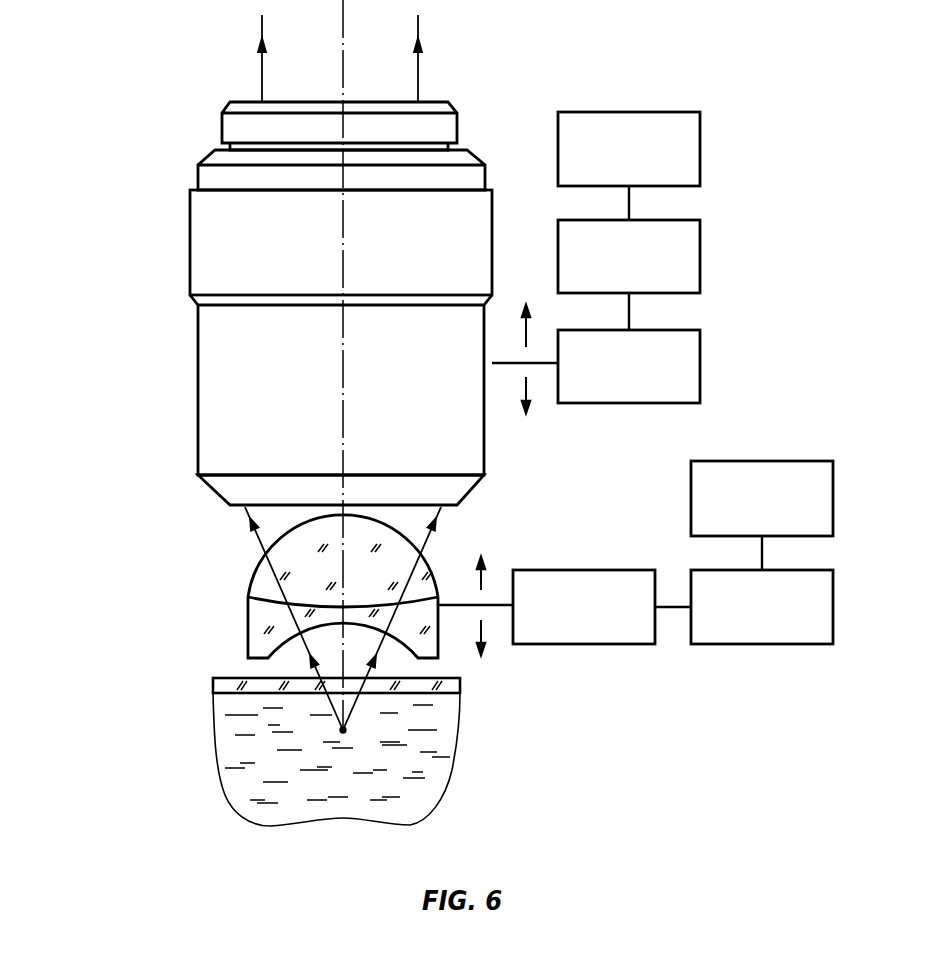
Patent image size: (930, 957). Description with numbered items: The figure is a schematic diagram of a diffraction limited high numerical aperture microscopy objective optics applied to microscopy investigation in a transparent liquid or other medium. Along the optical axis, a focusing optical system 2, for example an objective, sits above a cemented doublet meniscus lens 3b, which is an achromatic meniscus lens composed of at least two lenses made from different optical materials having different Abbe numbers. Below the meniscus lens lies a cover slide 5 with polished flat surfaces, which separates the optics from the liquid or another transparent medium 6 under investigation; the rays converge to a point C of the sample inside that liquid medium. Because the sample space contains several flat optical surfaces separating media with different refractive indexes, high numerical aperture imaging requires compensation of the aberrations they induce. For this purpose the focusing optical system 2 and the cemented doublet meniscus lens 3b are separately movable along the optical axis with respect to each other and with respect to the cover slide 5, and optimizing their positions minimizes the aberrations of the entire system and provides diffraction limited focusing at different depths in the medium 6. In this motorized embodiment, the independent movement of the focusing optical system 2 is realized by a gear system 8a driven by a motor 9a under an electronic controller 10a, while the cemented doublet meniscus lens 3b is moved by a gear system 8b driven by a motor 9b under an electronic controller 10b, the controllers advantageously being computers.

The focusing optical system 2 is at (188, 263).
The cemented doublet meniscus lens 3b is at (248, 598).
The cover slide 5 is at (215, 691).
The liquid or another transparent medium under microscopy investigation 6 is at (240, 781).
The point of a sample under investigation C is at (347, 729).
The gear system 8a is at (702, 377).
The motor 9a is at (702, 265).
The electronic controller 10a is at (702, 165).
The gear system 8b is at (594, 645).
The motor 9b is at (762, 644).
The electronic controller 10b is at (763, 461).